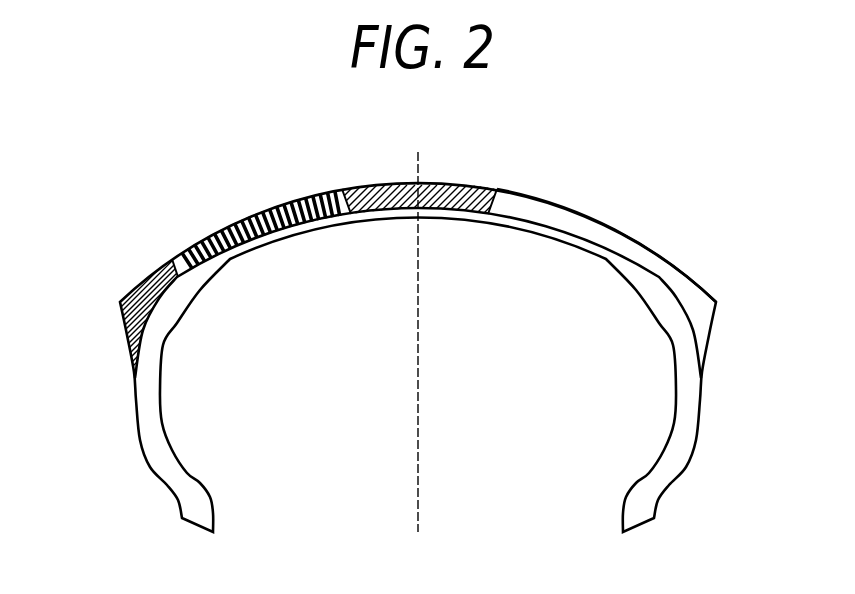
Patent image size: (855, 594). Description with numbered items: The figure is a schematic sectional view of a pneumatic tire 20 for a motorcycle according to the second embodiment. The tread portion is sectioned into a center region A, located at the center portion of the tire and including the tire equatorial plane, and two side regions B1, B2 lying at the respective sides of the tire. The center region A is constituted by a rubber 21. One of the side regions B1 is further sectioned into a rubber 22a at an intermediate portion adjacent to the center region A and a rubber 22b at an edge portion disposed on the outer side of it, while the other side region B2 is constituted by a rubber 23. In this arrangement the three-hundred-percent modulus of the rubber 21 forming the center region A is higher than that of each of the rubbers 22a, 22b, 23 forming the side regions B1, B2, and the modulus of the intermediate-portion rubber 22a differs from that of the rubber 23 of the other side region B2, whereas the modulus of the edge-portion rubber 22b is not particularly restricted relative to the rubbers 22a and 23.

The pneumatic tire 20 is at (130, 177).
The rubber constituting the center region 21 is at (468, 185).
The rubber of the intermediate portion 22a is at (264, 210).
The rubber of the edge portion 22b is at (143, 273).
The rubber constituting the other side region 23 is at (648, 262).
The center region A is at (502, 169).
The side region B1 is at (318, 168).
The side region B2 is at (723, 269).